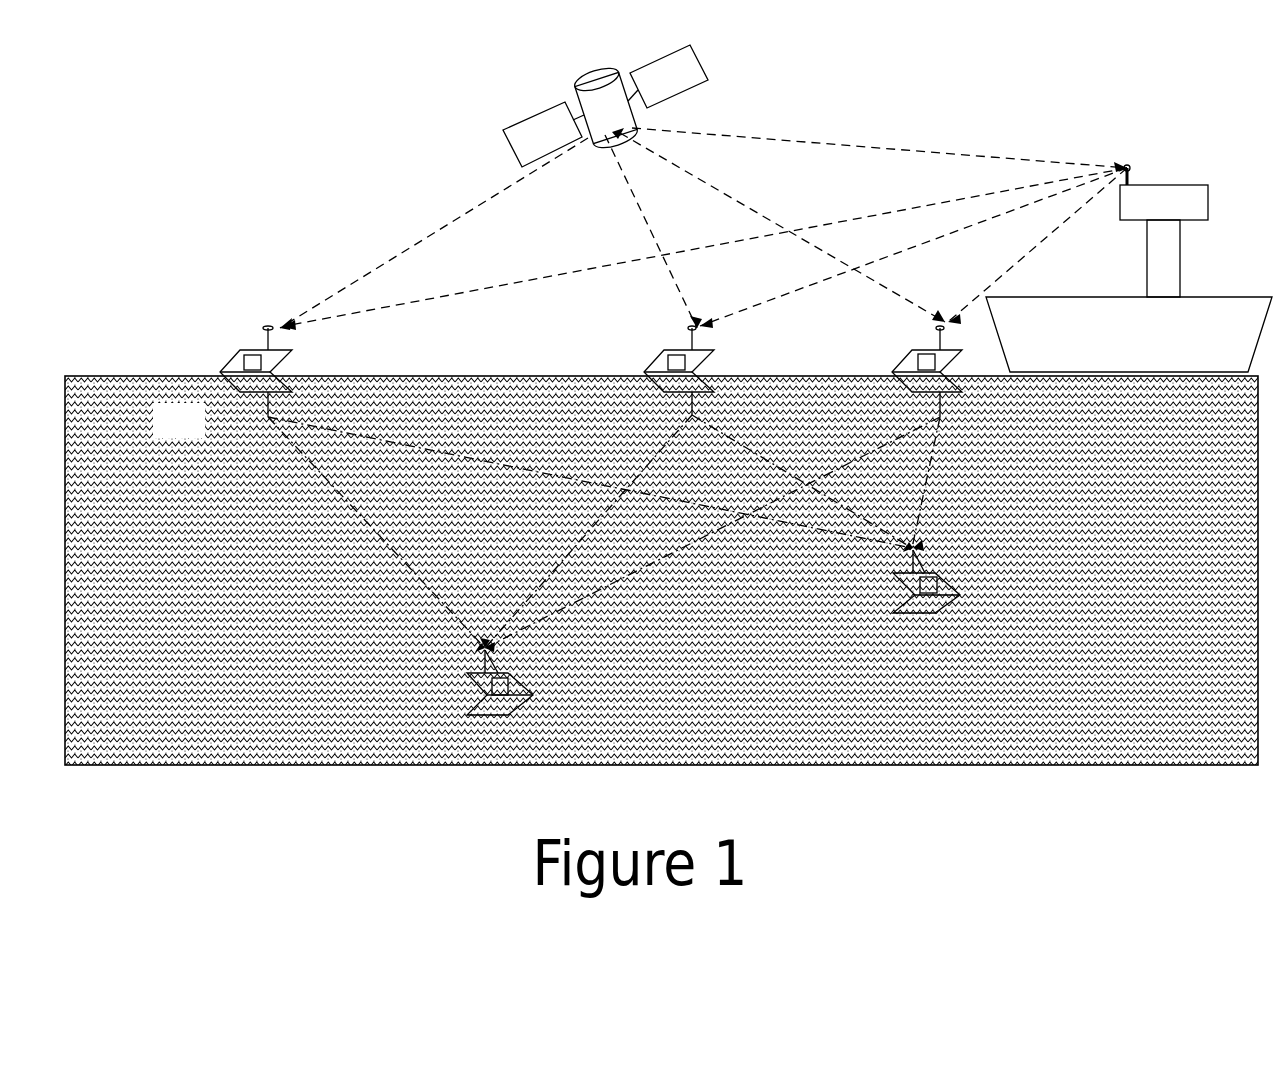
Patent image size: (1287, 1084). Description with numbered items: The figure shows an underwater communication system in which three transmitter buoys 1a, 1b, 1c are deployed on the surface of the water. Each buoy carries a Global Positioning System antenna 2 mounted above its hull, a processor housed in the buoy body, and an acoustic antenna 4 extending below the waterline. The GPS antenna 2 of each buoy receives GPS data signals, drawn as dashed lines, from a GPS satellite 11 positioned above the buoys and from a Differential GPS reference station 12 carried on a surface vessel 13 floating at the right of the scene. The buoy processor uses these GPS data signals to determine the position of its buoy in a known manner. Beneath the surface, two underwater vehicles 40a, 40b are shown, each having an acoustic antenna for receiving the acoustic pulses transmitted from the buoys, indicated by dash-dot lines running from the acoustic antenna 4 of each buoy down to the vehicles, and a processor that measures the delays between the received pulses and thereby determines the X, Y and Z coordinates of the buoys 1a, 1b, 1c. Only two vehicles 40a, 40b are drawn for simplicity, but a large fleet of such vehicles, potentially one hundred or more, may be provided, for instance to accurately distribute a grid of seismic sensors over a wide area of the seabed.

The transmitter buoy 1a is at (222, 367).
The transmitter buoy 1b is at (648, 368).
The transmitter buoy 1c is at (905, 365).
The Global Positioning System (GPS) antenna 2 is at (266, 337).
The acoustic antenna 4 is at (263, 405).
The GPS satellite 11 is at (590, 82).
The Differential GPS (DGPS) reference station 12 is at (1170, 187).
The surface vessel 13 is at (1220, 320).
The underwater vehicle 40a is at (479, 721).
The underwater vehicle 40b is at (901, 632).